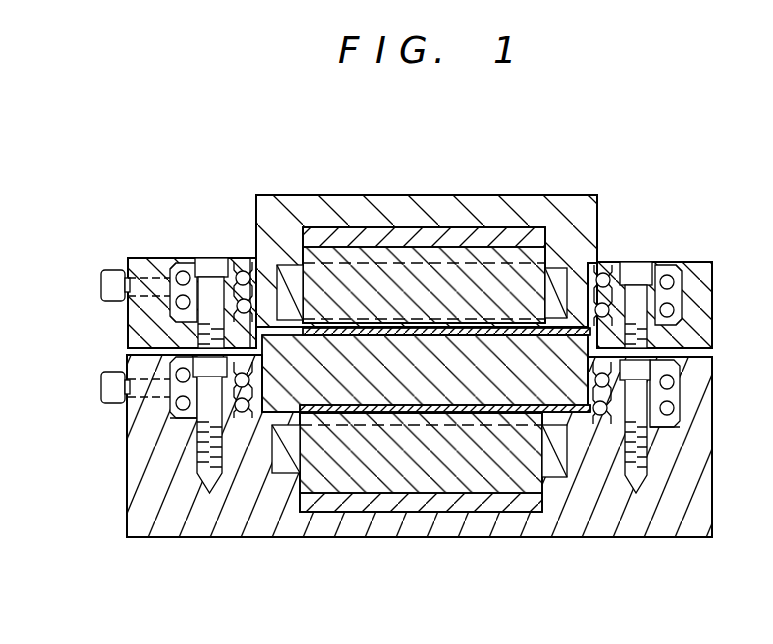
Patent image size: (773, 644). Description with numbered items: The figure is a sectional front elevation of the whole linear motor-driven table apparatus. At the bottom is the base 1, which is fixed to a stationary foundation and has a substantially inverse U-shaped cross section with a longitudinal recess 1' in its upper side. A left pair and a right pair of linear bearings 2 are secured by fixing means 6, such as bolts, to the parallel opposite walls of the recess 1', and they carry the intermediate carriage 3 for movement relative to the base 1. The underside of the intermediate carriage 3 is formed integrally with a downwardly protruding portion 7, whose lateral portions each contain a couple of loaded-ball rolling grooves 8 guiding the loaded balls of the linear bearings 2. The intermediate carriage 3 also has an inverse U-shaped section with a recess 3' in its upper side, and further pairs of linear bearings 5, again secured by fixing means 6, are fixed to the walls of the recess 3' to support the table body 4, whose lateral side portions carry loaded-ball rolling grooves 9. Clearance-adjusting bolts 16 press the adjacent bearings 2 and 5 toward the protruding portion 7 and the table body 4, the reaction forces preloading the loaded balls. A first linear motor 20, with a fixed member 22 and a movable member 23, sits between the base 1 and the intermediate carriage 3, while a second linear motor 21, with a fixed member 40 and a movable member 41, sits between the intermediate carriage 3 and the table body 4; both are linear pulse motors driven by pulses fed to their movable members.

The base 1 is at (419, 475).
The recess 1' is at (558, 466).
The linear bearings 2 is at (170, 415).
The intermediate carriage 3 is at (382, 303).
The recess 3' is at (296, 238).
The table body 4 is at (252, 200).
The linear bearings 5 is at (187, 258).
The fixing means 6 is at (216, 256).
The protruding portion 7 is at (285, 400).
The loaded-ball rolling grooves 8 is at (205, 358).
The loaded-ball rolling grooves 9 is at (256, 300).
The clearance-adjusting bolts 16 is at (100, 278).
The first linear motor 20 is at (292, 490).
The second linear motor 21 is at (550, 254).
The fixed member 22 is at (440, 412).
The movable member 23 is at (492, 512).
The fixed member 40 is at (462, 333).
The movable member 41 is at (440, 232).